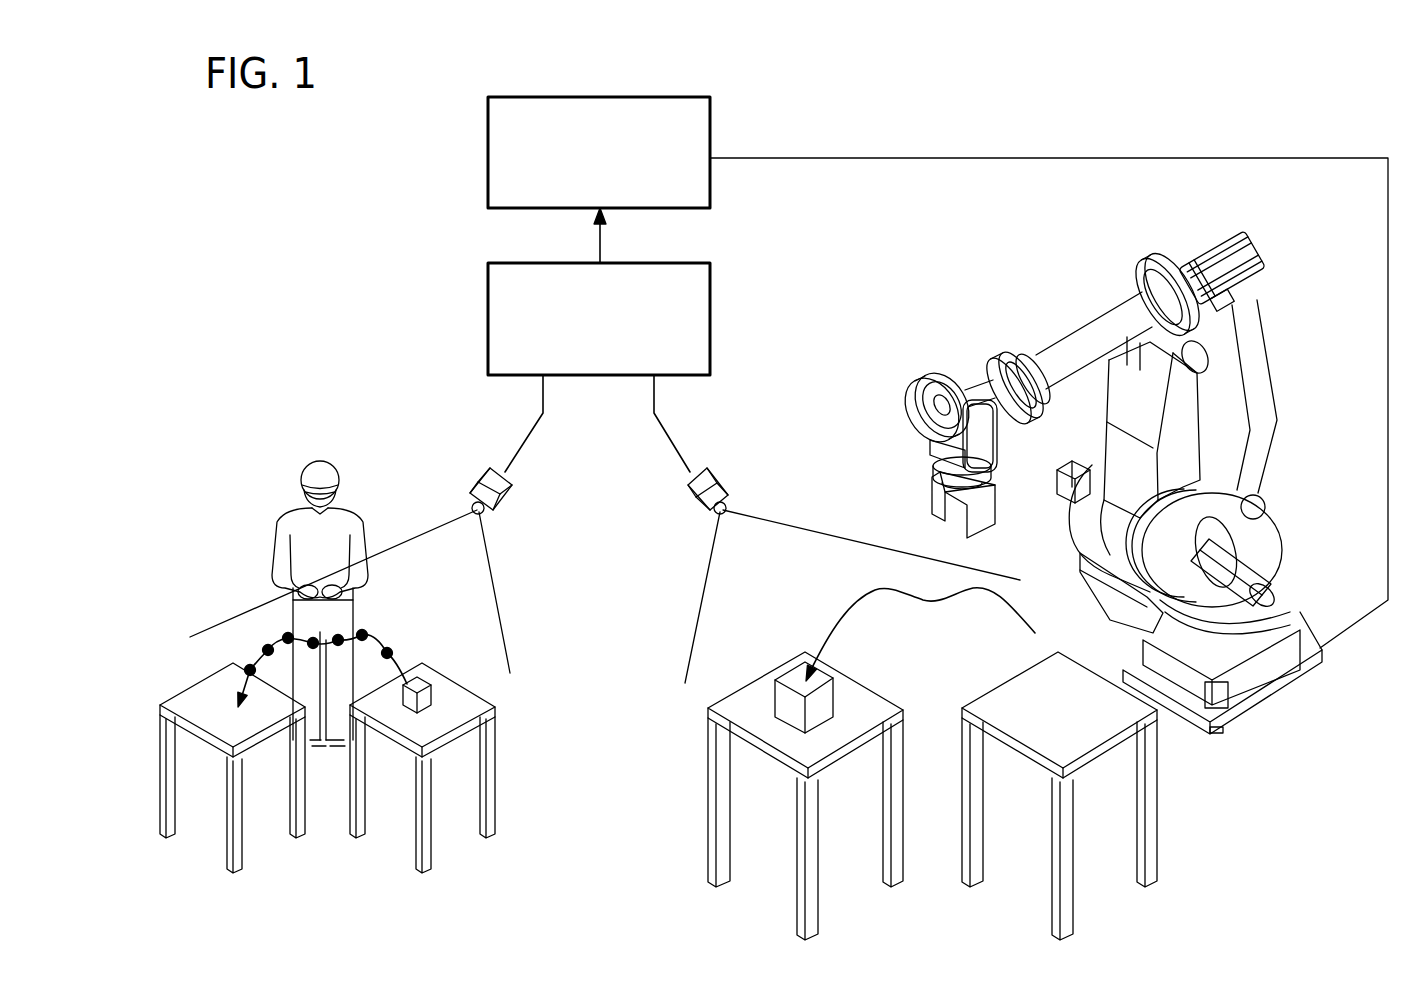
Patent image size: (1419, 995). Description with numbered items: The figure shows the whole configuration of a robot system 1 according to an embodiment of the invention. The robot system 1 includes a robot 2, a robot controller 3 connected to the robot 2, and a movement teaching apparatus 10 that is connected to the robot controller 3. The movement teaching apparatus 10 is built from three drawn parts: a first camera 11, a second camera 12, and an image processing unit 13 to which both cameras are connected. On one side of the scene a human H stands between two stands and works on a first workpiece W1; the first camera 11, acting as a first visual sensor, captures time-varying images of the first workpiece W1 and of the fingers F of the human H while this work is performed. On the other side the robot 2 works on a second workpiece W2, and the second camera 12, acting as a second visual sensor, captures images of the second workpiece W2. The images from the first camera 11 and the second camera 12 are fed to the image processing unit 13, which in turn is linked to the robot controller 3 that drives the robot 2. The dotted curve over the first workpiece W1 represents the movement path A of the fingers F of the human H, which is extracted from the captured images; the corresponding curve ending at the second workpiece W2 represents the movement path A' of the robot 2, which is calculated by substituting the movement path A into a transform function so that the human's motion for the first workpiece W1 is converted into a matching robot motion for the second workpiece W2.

The robot system 1 is at (203, 242).
The robot 2 is at (978, 328).
The robot controller 3 is at (488, 144).
The movement teaching apparatus 10 is at (424, 401).
The first camera 11 is at (472, 484).
The second camera 12 is at (720, 481).
The image processing unit 13 is at (488, 320).
The human H is at (303, 462).
The fingers F is at (305, 592).
The movement path A is at (322, 664).
The movement path A' is at (920, 624).
The first workpiece W1 is at (417, 692).
The second workpiece W2 is at (783, 703).